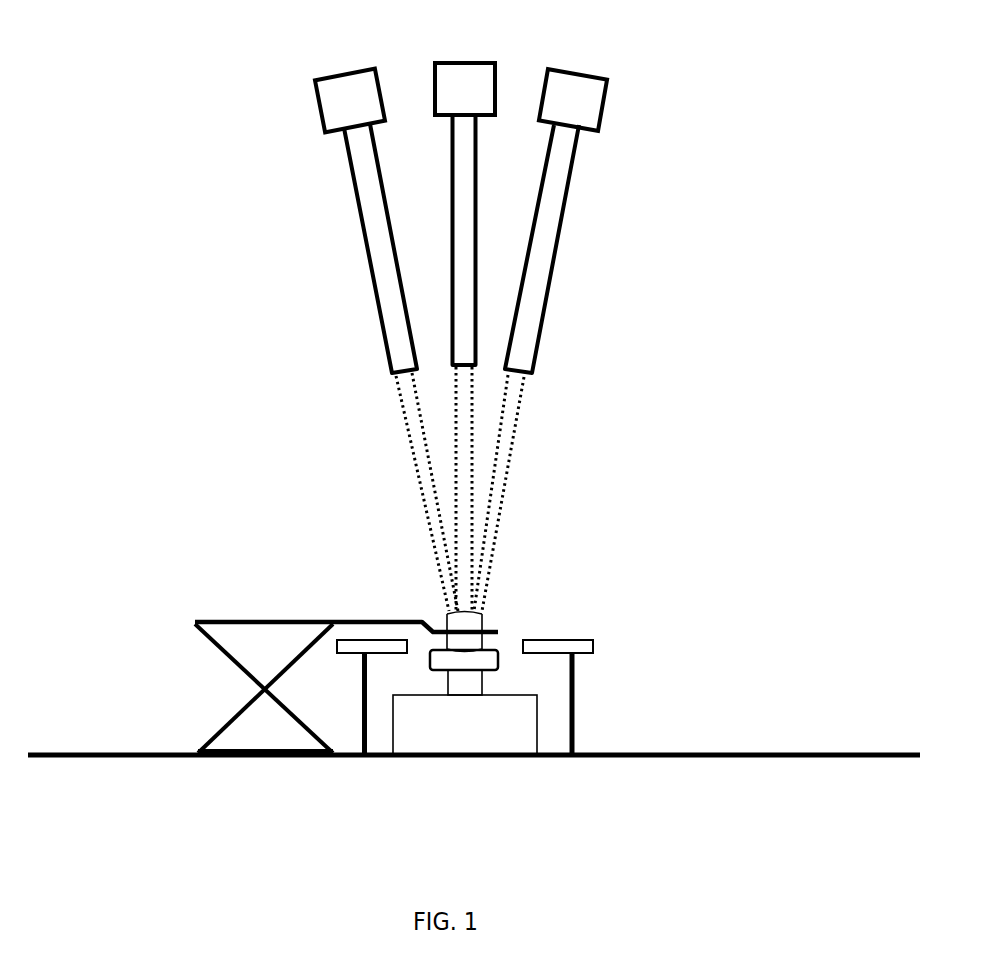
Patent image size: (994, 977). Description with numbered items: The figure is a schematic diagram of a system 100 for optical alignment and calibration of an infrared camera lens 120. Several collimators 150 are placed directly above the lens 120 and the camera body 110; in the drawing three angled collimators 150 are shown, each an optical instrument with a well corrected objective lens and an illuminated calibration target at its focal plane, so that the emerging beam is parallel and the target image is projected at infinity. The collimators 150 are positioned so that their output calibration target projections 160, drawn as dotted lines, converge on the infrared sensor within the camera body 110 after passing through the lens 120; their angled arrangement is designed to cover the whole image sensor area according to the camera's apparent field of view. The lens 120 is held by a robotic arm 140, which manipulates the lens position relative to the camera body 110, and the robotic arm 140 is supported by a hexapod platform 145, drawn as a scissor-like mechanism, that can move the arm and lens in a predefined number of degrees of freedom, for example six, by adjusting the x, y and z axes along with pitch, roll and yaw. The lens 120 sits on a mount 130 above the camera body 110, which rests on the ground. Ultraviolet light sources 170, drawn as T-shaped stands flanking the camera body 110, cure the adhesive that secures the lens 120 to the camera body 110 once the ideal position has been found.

The system 100 is at (180, 60).
The camera body 110 is at (470, 678).
The lens 120 is at (447, 612).
The sample stage 130 is at (490, 645).
The robotic arm 140 is at (222, 620).
The hexapod platform 145 is at (240, 707).
The collimators 150 is at (367, 218).
The beams / fields of view 160 is at (415, 452).
The ultraviolet light sources 170 is at (557, 647).